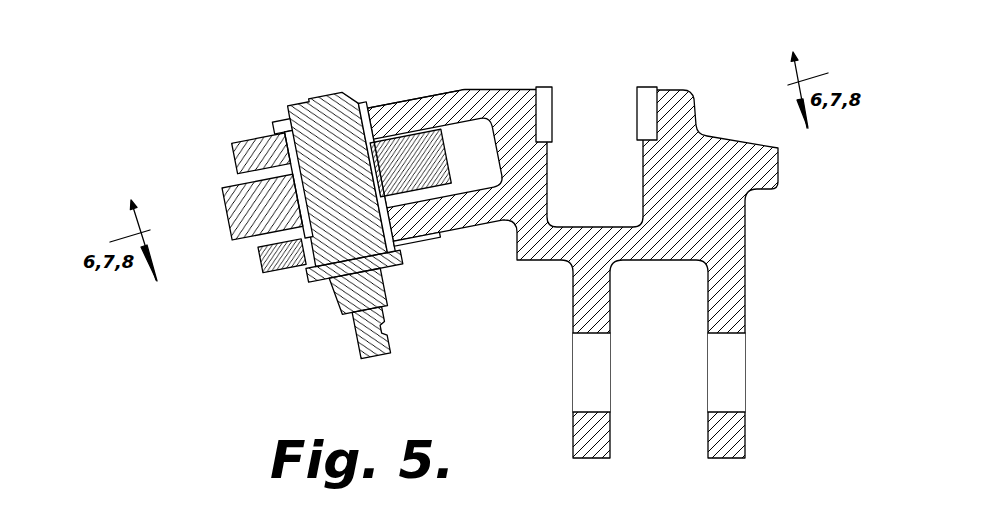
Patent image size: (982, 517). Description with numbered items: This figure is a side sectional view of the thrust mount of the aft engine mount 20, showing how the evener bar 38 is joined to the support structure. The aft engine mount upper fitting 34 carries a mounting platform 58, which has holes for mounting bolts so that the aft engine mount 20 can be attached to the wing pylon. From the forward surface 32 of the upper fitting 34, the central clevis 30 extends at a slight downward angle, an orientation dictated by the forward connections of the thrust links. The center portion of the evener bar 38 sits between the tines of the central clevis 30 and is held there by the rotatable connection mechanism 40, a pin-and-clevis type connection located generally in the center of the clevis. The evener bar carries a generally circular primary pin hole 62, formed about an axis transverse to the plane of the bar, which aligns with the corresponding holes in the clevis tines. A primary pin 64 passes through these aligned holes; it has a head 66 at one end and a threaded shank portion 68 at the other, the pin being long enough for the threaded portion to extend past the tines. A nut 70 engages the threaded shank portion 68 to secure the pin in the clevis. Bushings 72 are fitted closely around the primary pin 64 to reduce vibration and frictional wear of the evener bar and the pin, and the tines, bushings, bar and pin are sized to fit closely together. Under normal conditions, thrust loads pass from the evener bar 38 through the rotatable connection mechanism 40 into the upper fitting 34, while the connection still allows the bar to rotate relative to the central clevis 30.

The aft engine mount 20 is at (628, 247).
The central clevis 30 is at (248, 140).
The forward surface 32 is at (503, 92).
The aft engine mount upper fitting 34 is at (780, 168).
The evener bar 38 is at (237, 197).
The rotatable connection mechanism 40 is at (348, 188).
The mounting platform 58 is at (553, 120).
The primary pin hole 62 is at (368, 113).
The primary pin 64 is at (320, 97).
The head 66 is at (278, 124).
The threaded shank portion 68 is at (408, 250).
The nut 70 is at (388, 278).
The bushings 72 is at (362, 105).